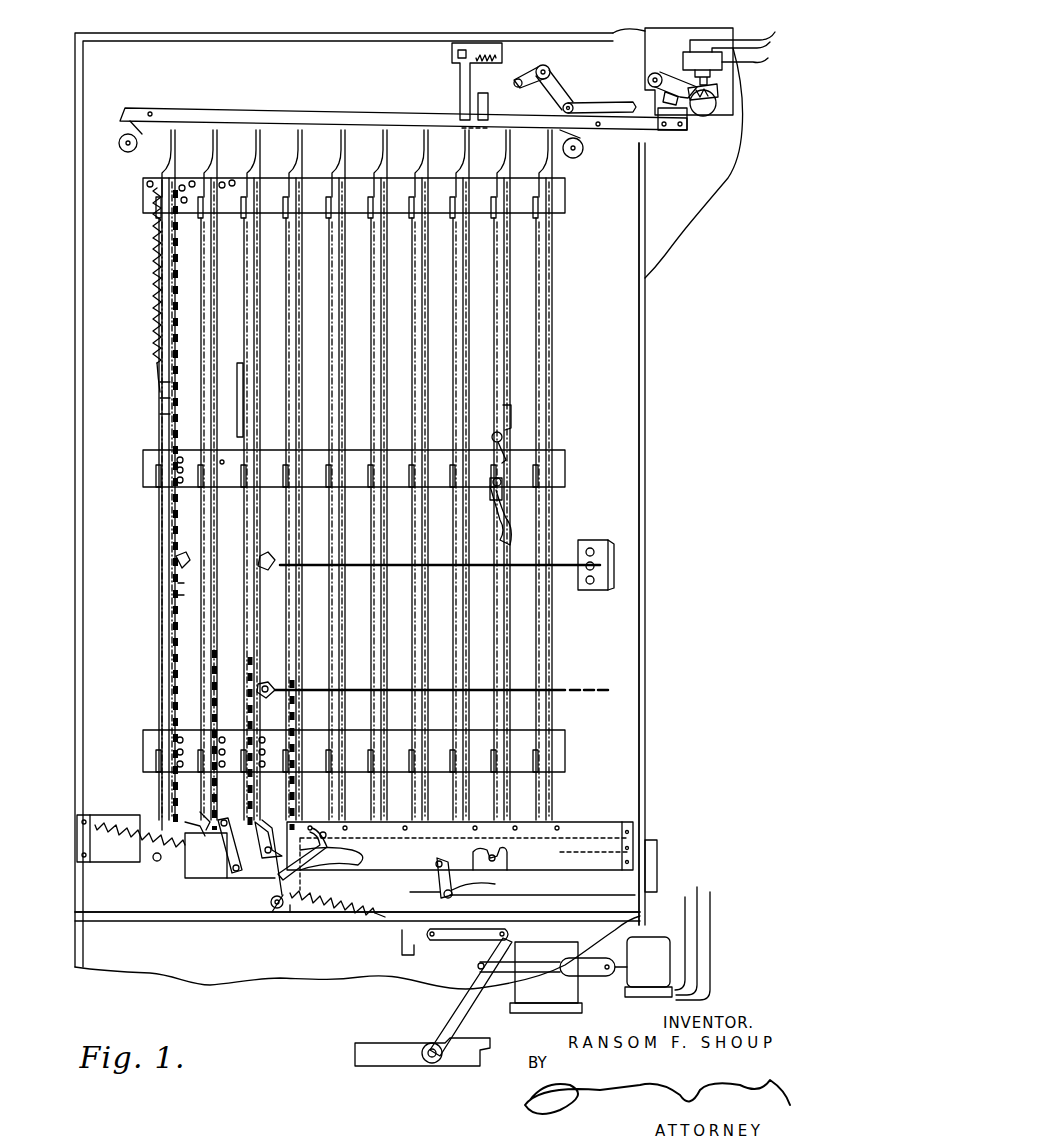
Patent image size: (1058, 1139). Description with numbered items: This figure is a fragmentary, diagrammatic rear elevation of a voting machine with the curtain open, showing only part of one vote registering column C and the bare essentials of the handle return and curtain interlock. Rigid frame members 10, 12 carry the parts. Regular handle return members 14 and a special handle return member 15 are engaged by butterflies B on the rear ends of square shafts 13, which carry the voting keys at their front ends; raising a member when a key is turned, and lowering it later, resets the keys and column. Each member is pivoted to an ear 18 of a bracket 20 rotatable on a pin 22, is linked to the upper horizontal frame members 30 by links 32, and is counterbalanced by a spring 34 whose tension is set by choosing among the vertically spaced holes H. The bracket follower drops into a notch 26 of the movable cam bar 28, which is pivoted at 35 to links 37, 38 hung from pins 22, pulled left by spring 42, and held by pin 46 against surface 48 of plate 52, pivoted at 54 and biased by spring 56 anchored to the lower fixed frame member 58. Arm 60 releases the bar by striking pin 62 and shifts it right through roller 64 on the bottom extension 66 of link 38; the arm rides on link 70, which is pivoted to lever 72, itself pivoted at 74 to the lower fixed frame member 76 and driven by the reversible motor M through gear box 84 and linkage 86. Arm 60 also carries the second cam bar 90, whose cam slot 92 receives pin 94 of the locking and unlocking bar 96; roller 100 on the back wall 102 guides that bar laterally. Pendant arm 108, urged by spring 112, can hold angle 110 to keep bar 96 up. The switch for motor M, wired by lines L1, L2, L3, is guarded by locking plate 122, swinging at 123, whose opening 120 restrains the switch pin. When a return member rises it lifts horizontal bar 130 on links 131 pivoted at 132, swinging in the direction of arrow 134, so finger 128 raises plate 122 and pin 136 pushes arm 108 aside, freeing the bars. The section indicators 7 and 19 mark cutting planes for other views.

The section line 7- 7 is at (392, 760).
The rigid frame member 10 is at (83, 562).
The rigid frame member 12 is at (112, 862).
The square shaft 13 is at (178, 596).
The regular handle return member 14 is at (553, 388).
The special handle return member 15 is at (160, 634).
The ear 18 is at (72, 150).
The section line 19- 19 is at (72, 810).
The bracket 20 is at (180, 820).
The pin 22 is at (260, 818).
The notch 26 is at (206, 855).
The movable cam bar 28 is at (188, 878).
The upper horizontal frame member 30 is at (566, 203).
The link 32 is at (500, 497).
The spring 34 is at (153, 272).
The pivot 35 is at (262, 885).
The link 37 is at (240, 871).
The link 38 is at (473, 896).
The spring 42 is at (152, 820).
The pin 46 is at (330, 850).
The surface 48 is at (324, 840).
The plate 52 is at (291, 912).
The pivot 54 is at (270, 852).
The spring 56 is at (345, 913).
The lower fixed frame member 58 is at (162, 918).
The arm 60 is at (420, 946).
The pin 62 is at (270, 915).
The roller 64 is at (522, 901).
The bottom extension 66 is at (433, 883).
The link 70 is at (463, 940).
The lever 72 is at (450, 1010).
The pivot 74 is at (440, 1065).
The lower fixed frame member 76 is at (394, 1066).
The gear box 84 is at (545, 1004).
The linkage 86 is at (598, 978).
The second cam bar 90 is at (658, 853).
The cam slot 92 is at (650, 867).
The pin 94 is at (480, 870).
The locking and unlocking bar 96 is at (508, 448).
The roller 100 is at (511, 422).
The back wall 102 is at (641, 342).
The pendant arm 108 is at (460, 100).
The angle 110 is at (489, 103).
The spring 112 is at (536, 71).
The opening 120 is at (716, 94).
The locking plate 122 is at (675, 72).
The pivot 123 is at (648, 78).
The finger 128 is at (688, 126).
The horizontal bar 130 is at (290, 114).
The link 131 is at (126, 132).
The pivot 132 is at (126, 152).
The arrow 134 is at (138, 93).
The pin 136 is at (458, 126).
The vertically spaced holes H is at (160, 416).
The vote registering column C is at (243, 412).
The butterfly B is at (266, 556).
The line L1 is at (679, 906).
The line L2 is at (697, 889).
The line L3 is at (710, 915).
The reversible motor M is at (648, 967).